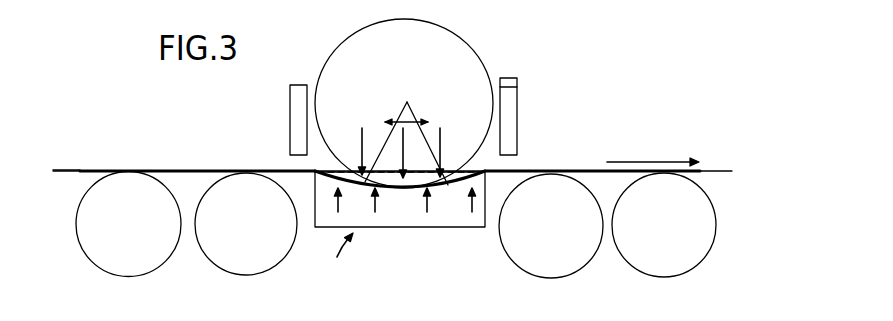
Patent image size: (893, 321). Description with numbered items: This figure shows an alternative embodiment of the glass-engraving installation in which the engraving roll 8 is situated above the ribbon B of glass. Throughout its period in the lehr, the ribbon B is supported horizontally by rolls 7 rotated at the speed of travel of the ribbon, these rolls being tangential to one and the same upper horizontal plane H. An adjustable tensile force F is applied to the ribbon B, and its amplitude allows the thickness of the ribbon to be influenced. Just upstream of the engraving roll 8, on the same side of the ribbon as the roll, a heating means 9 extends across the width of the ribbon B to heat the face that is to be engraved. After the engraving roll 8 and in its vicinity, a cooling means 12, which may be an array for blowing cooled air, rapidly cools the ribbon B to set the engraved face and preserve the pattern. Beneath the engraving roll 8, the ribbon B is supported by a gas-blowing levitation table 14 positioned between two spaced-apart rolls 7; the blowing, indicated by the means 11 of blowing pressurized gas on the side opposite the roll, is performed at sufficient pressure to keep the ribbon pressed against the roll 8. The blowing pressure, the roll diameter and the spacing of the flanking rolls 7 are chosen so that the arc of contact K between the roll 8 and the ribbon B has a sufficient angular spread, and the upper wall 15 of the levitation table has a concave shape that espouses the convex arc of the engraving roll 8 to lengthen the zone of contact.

The rolls 7 is at (170, 253).
The engraving roll 8 is at (483, 62).
The heating means 9 is at (295, 110).
The cooling means 12 is at (512, 105).
The levitation table 14 is at (412, 227).
The means of blowing pressurized gas 11 is at (338, 259).
The upper wall of the levitation table 15 is at (458, 182).
The arc of contact K is at (390, 190).
The ribbon B is at (183, 167).
The upper horizontal plane H is at (65, 168).
The tensile force F is at (630, 160).